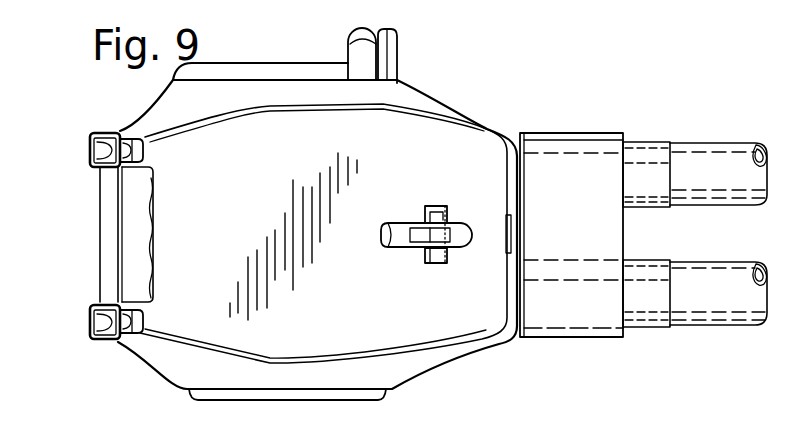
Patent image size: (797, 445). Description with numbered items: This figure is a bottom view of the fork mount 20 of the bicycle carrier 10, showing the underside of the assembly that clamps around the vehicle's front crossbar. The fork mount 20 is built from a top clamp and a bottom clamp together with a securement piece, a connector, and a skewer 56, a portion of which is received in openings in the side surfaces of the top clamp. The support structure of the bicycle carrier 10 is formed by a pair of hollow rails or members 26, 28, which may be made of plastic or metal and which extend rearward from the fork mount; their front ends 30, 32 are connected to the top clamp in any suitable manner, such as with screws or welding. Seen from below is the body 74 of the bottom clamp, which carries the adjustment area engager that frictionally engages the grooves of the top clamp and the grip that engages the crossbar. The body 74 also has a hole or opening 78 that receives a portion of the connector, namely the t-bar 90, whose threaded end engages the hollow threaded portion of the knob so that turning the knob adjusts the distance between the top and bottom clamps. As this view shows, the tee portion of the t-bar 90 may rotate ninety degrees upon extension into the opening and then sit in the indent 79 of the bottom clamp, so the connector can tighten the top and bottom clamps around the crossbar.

The medical device assembly 10 is at (50, 100).
The fork mount 20 is at (66, 160).
The rail 26 is at (712, 316).
The rail 28 is at (707, 160).
The front end 30 is at (573, 352).
The front end 32 is at (589, 116).
The skewer 56 is at (412, 61).
The body 74 is at (178, 367).
The hole or opening 78 is at (400, 240).
The indent 79 is at (432, 262).
The t-bar 90 is at (447, 215).